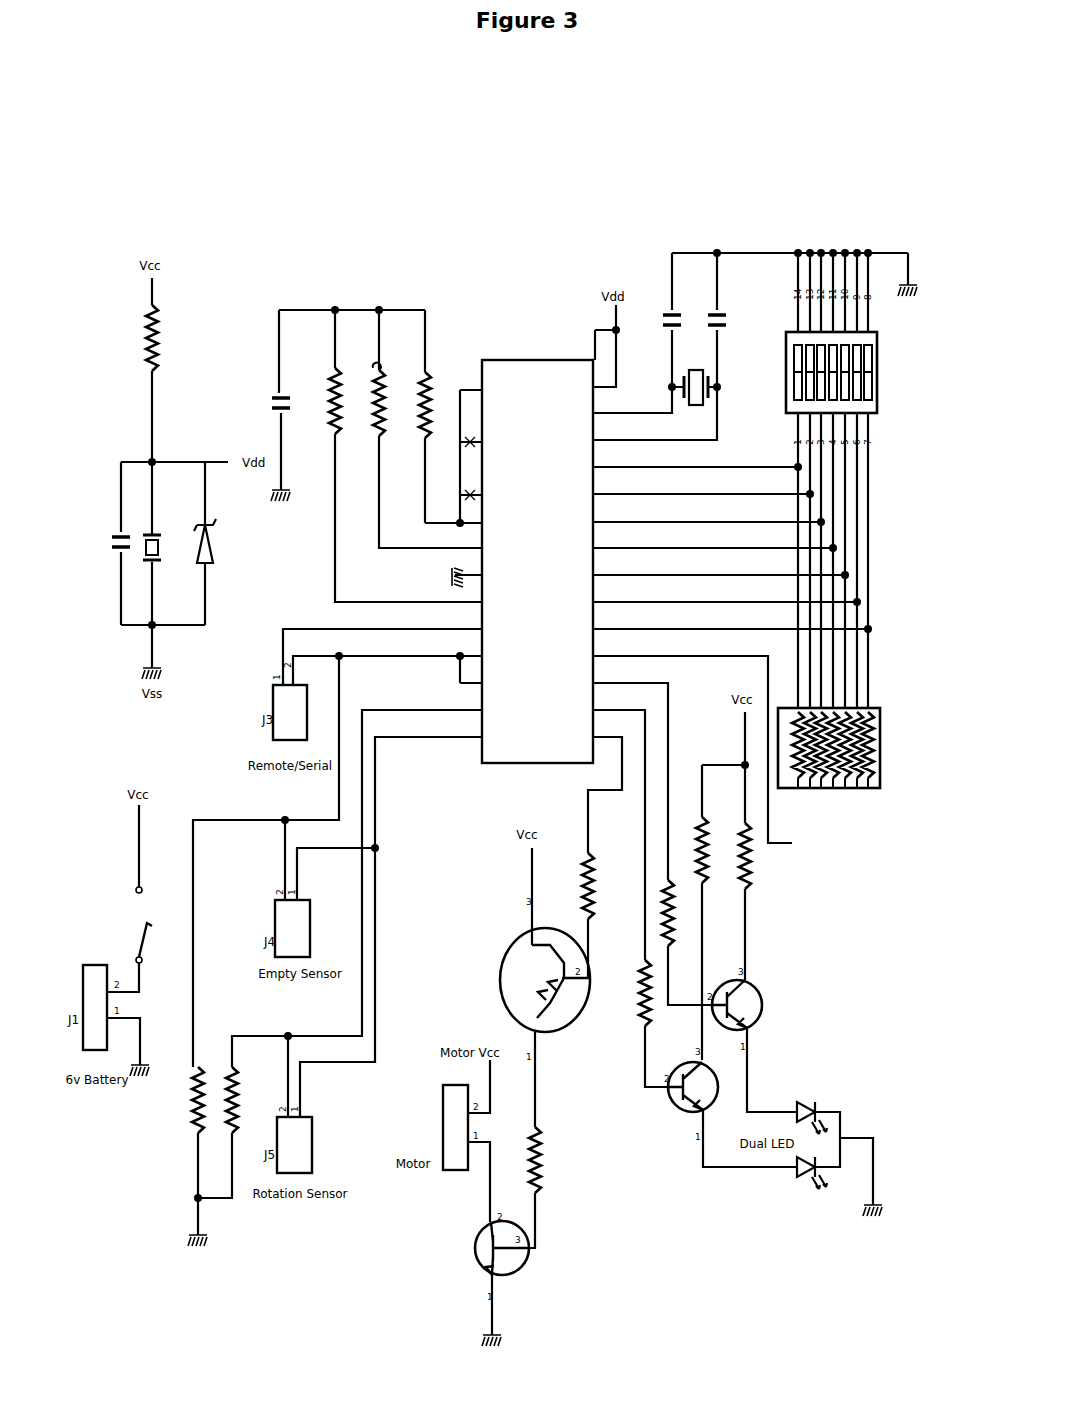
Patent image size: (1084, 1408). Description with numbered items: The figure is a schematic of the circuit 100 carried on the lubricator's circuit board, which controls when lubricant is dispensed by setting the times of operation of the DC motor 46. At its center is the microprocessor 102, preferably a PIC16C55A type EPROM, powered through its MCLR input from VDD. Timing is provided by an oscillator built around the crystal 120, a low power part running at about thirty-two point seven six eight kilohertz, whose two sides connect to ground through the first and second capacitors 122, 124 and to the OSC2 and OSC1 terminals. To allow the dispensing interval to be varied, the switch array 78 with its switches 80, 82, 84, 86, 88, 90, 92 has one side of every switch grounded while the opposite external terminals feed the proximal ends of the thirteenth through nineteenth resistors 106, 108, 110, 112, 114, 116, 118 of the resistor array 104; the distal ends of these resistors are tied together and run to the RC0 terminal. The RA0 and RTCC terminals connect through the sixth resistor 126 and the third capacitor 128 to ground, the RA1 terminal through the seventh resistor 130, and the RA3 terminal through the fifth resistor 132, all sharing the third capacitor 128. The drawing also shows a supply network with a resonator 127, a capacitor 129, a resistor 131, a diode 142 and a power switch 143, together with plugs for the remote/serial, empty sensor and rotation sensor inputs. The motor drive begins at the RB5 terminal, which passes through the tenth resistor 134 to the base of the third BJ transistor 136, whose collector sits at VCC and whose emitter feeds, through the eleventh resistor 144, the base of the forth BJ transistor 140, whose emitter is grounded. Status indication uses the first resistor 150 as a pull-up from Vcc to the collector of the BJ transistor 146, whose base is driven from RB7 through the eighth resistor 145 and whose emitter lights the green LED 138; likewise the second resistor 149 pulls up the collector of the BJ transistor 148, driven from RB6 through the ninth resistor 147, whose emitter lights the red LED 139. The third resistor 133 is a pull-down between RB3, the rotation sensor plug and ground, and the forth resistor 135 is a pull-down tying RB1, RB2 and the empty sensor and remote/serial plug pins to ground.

The circuit 100 is at (365, 190).
The microprocessor 102 is at (528, 358).
The resistor array 104 is at (880, 752).
The thirteenth resistor 106 is at (799, 788).
The fourteenth resistor 108 is at (811, 788).
The fifteenth resistor 110 is at (822, 788).
The sixteenth resistor 112 is at (834, 788).
The seventeenth resistor 114 is at (846, 788).
The eighteenth resistor 116 is at (858, 788).
The nineteenth resistor 118 is at (869, 788).
The crystal 120 is at (697, 368).
The first capacitor 122 is at (668, 318).
The second capacitor 124 is at (721, 325).
The sixth resistor 126 is at (430, 400).
The resonator 127 is at (158, 540).
The third capacitor 128 is at (278, 398).
The capacitor 129 is at (118, 536).
The seventh resistor 130 is at (378, 410).
The resistor 131 is at (156, 340).
The fifth resistor 132 is at (333, 410).
The third resistor 133 is at (230, 1090).
The tenth resistor 134 is at (591, 880).
The forth resistor 135 is at (195, 1100).
The third BJ transistor 136 is at (520, 985).
The green LED 138 is at (806, 1100).
The red LED 139 is at (800, 1187).
The forth BJ transistor 140 is at (490, 1255).
The zener diode 142 is at (213, 540).
The power switch 143 is at (140, 928).
The eleventh resistor 144 is at (538, 1160).
The eighth resistor 145 is at (665, 915).
The BJ transistor 146 is at (762, 1005).
The ninth resistor 147 is at (643, 1000).
The BJ transistor 148 is at (690, 1105).
The second resistor 149 is at (700, 860).
The first resistor 150 is at (744, 860).
The DC motor 46 is at (443, 1135).
The switch array 78 is at (877, 396).
The switch 80 is at (795, 340).
The switch 82 is at (808, 340).
The switch 84 is at (819, 340).
The switch 86 is at (831, 340).
The switch 88 is at (843, 340).
The switch 90 is at (855, 340).
The switch 92 is at (867, 340).